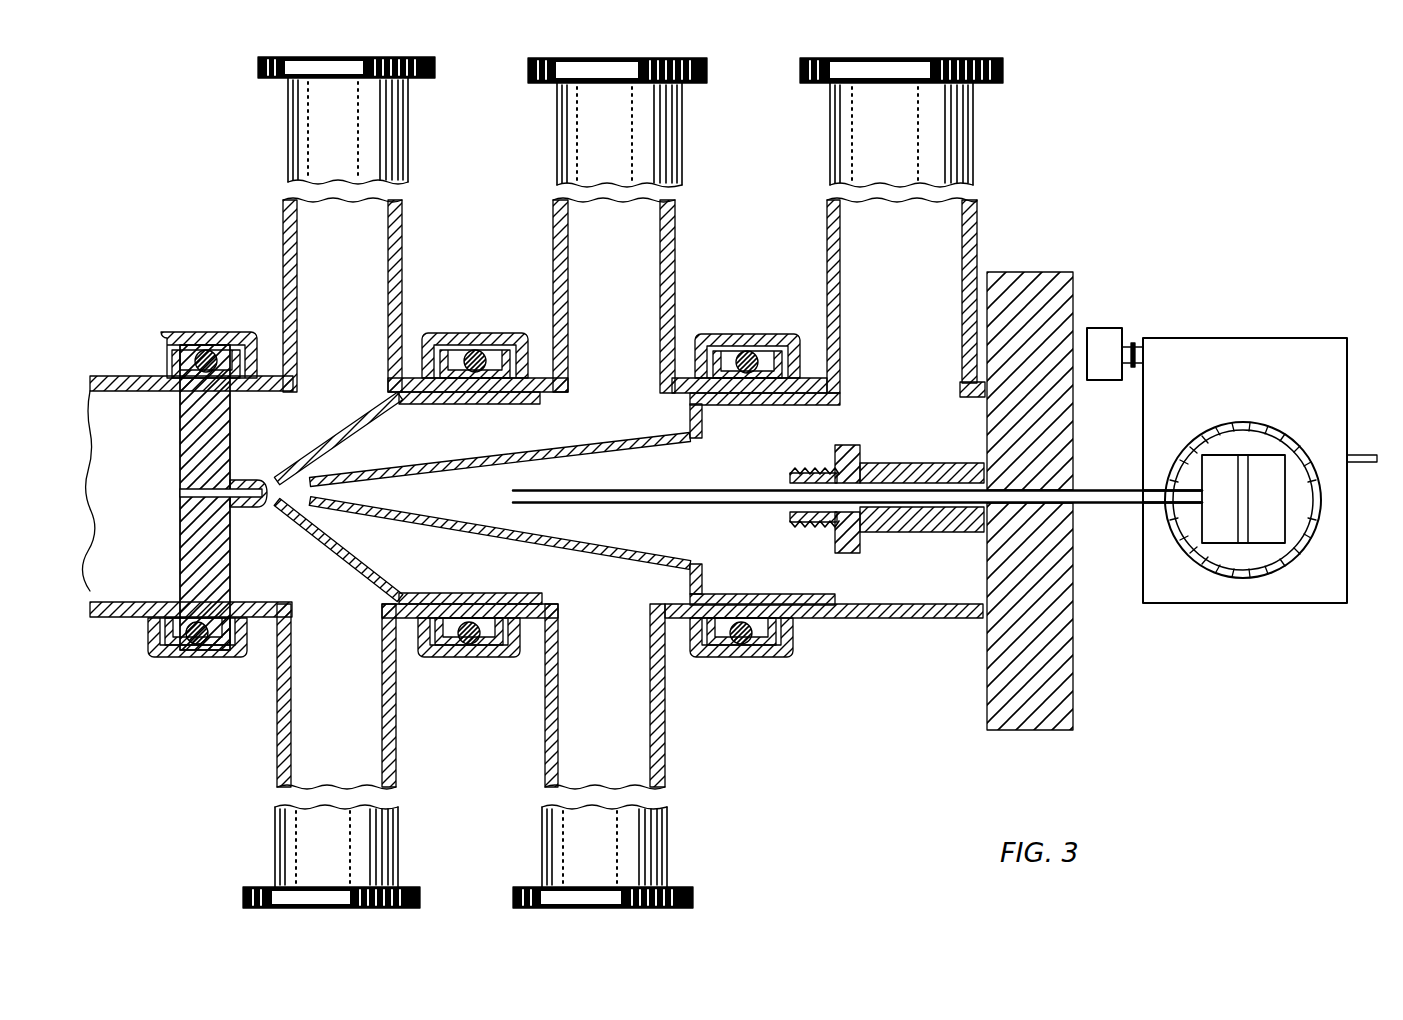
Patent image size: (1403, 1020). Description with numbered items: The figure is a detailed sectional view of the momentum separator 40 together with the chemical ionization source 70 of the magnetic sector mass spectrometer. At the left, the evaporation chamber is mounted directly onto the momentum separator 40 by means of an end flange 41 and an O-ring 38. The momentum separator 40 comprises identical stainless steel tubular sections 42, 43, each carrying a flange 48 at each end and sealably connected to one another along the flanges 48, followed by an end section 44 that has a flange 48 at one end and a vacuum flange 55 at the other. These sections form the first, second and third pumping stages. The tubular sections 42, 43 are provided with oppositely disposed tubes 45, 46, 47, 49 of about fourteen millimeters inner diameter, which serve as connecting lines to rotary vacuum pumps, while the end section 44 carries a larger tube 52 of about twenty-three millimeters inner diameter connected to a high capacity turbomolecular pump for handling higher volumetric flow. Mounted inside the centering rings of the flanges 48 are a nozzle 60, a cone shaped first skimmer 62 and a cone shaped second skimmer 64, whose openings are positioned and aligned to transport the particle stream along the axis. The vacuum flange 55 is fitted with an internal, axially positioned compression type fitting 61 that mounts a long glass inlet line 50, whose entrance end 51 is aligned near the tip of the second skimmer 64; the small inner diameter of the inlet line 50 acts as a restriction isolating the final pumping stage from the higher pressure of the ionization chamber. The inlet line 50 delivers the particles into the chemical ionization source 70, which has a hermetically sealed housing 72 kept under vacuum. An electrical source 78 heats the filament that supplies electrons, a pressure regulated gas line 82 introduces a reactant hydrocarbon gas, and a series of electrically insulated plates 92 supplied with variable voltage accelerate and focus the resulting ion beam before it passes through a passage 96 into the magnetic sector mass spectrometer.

The O-ring 38 is at (206, 348).
The momentum separator 40 is at (236, 219).
The end flange 41 is at (158, 345).
The tubular section 42 is at (262, 622).
The tubular section 43 is at (536, 620).
The end section 44 is at (905, 620).
The tube 45 is at (410, 170).
The tube 46 is at (402, 830).
The tube 47 is at (684, 172).
The flange 48 is at (455, 342).
The tube 49 is at (670, 830).
The inlet line 50 is at (742, 487).
The entrance end 51 is at (512, 492).
The tube 52 is at (978, 176).
The vacuum flange 55 is at (1075, 302).
The nozzle 60 is at (259, 478).
The compression type fitting 61 is at (861, 449).
The first skimmer 62 is at (338, 440).
The second skimmer 64 is at (438, 466).
The chemical ionization source 70 is at (1256, 293).
The housing 72 is at (1300, 605).
The electrical source 78 is at (1108, 383).
The gas line 82 is at (1378, 465).
The plates 92 is at (1223, 528).
The passage 96 is at (1198, 428).